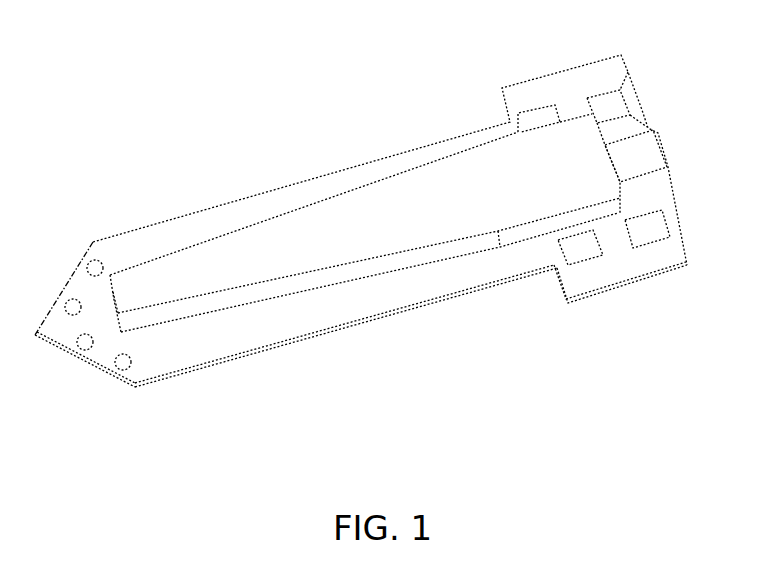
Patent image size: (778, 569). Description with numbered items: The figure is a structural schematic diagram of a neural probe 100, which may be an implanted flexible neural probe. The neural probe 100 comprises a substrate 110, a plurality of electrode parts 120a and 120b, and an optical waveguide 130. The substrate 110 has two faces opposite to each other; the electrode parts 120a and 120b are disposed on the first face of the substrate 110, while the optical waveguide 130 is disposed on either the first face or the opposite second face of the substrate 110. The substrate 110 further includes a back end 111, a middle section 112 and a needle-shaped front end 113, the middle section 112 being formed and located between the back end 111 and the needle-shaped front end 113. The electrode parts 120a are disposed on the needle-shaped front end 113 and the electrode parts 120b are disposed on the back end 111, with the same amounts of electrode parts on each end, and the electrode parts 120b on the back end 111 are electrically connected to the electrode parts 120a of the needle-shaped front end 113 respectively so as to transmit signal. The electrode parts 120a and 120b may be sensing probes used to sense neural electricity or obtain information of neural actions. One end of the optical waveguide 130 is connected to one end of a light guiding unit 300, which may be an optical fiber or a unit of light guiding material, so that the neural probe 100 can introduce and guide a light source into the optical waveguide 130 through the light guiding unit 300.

The neural probe 100 is at (383, 223).
The substrate 110 is at (390, 246).
The back end 111 is at (620, 298).
The middle section 112 is at (369, 300).
The needle-shaped front end 113 is at (81, 384).
The electrode parts 120a is at (81, 307).
The electrode parts 120b is at (633, 65).
The optical waveguide 130 is at (365, 196).
The light guiding unit 300 is at (671, 147).